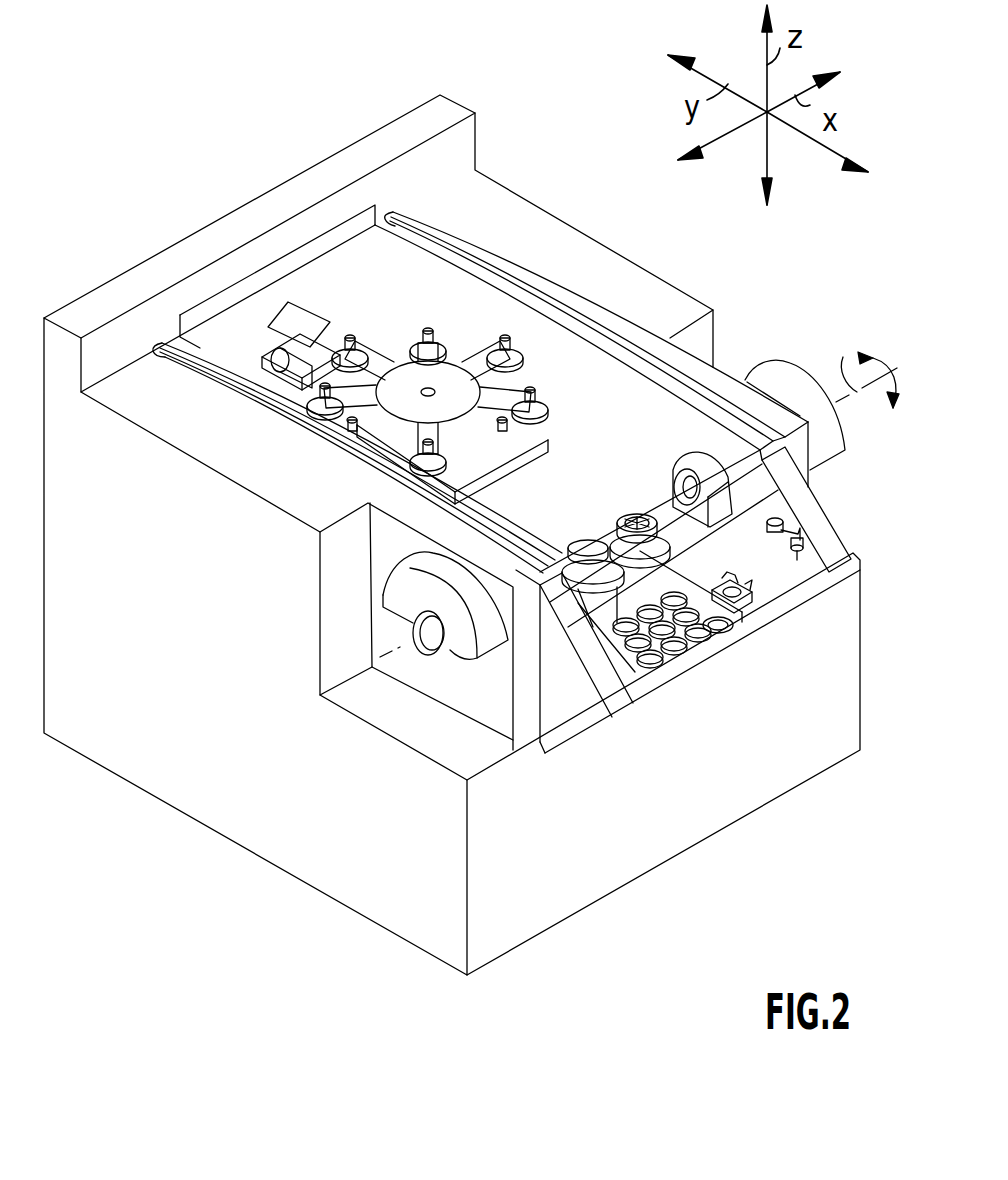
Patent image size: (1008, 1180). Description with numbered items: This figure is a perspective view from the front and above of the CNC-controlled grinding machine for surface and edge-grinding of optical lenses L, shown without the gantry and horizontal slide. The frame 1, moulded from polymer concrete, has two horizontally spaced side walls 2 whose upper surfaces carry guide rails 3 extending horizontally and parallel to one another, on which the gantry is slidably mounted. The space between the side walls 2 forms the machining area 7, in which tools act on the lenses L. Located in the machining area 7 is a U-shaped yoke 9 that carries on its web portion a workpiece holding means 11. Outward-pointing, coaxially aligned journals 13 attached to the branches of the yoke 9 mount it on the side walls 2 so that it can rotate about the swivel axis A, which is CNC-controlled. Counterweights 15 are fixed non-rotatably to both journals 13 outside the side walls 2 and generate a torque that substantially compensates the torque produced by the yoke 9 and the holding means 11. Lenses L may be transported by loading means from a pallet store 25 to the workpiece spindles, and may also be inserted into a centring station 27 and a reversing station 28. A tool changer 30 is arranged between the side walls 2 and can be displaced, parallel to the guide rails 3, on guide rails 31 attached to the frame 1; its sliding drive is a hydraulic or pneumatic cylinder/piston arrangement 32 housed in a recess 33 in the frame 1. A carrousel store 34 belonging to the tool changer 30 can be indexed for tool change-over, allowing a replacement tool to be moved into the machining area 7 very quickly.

The frame 1 is at (292, 847).
The side walls 2 is at (710, 382).
The guide rails 3 is at (455, 250).
The machining area 7 is at (585, 530).
The U-shaped yoke 9 is at (735, 509).
The workpiece holding means 11 is at (745, 560).
The journals 13 is at (428, 634).
The counterweights 15 is at (400, 597).
The pallet store 25 is at (715, 645).
The centring station 27 is at (753, 595).
The reversing station 28 is at (803, 548).
The tool changer 30 is at (520, 340).
The guide rails 31 is at (283, 305).
The cylinder/piston arrangement 32 is at (300, 358).
The recess 33 is at (312, 368).
The carrousel store 34 is at (462, 353).
The swivel axis A is at (866, 367).
The optical lenses L is at (693, 655).